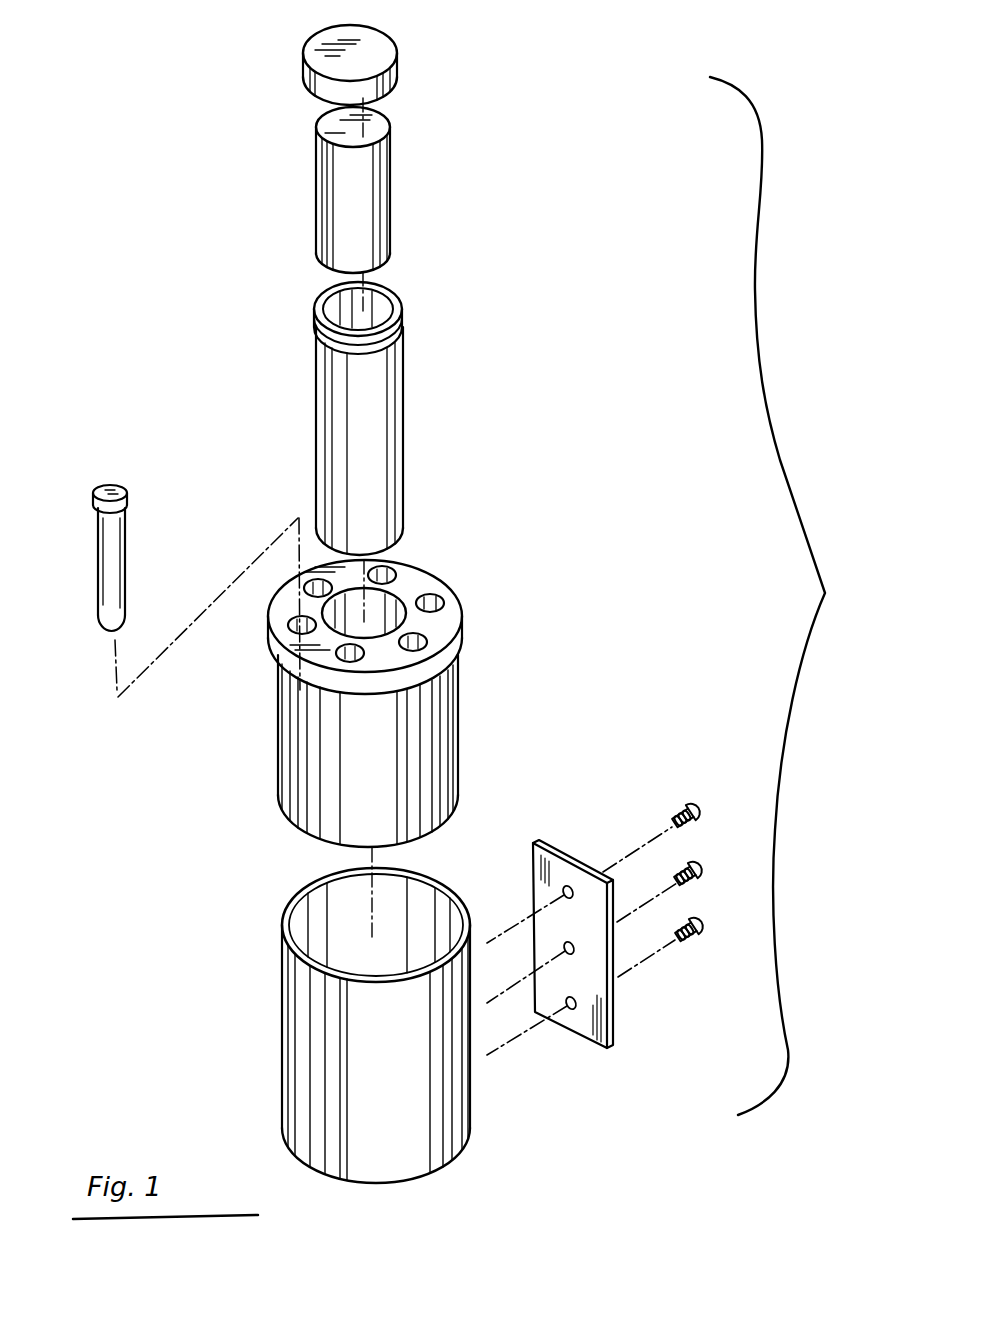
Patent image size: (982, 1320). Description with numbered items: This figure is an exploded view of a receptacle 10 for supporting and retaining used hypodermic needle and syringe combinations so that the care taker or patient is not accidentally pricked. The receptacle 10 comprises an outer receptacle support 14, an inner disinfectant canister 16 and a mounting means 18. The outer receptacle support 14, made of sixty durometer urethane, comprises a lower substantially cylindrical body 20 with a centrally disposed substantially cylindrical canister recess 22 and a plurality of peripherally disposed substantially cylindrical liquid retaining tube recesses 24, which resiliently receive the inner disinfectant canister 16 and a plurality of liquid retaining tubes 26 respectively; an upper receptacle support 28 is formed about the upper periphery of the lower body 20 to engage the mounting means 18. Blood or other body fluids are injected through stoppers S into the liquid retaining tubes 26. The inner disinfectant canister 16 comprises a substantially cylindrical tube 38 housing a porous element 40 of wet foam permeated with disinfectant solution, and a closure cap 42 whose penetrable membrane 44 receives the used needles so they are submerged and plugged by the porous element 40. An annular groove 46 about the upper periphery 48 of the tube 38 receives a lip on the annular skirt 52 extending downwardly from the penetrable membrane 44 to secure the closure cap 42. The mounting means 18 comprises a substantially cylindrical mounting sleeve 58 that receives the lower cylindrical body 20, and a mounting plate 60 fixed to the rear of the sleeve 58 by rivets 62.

The receptacle 10 is at (797, 596).
The outer receptacle support 14 is at (533, 728).
The inner disinfectant canister 16 is at (453, 292).
The mounting means 18 is at (542, 1122).
The lower substantially cylindrical body 20 is at (394, 688).
The centrally disposed substantially cylindrical canister recess 22 is at (382, 607).
The peripherally disposed substantially cylindrical liquid retaining tube recesses 24 is at (432, 603).
The liquid retaining tubes 26 is at (100, 592).
The upper receptacle support 28 is at (440, 635).
The substantially cylindrical tube 38 is at (340, 418).
The porous element 40 is at (382, 195).
The closure cap 42 is at (345, 66).
The penetrable membrane 44 is at (368, 52).
The annular groove 46 is at (318, 341).
The upper periphery 48 is at (400, 347).
The annular skirt 52 is at (308, 80).
The substantially cylindrical mounting sleeve 58 is at (295, 1059).
The mounting plate 60 is at (612, 1023).
The rivets 62 is at (688, 807).
The stoppers S is at (120, 483).